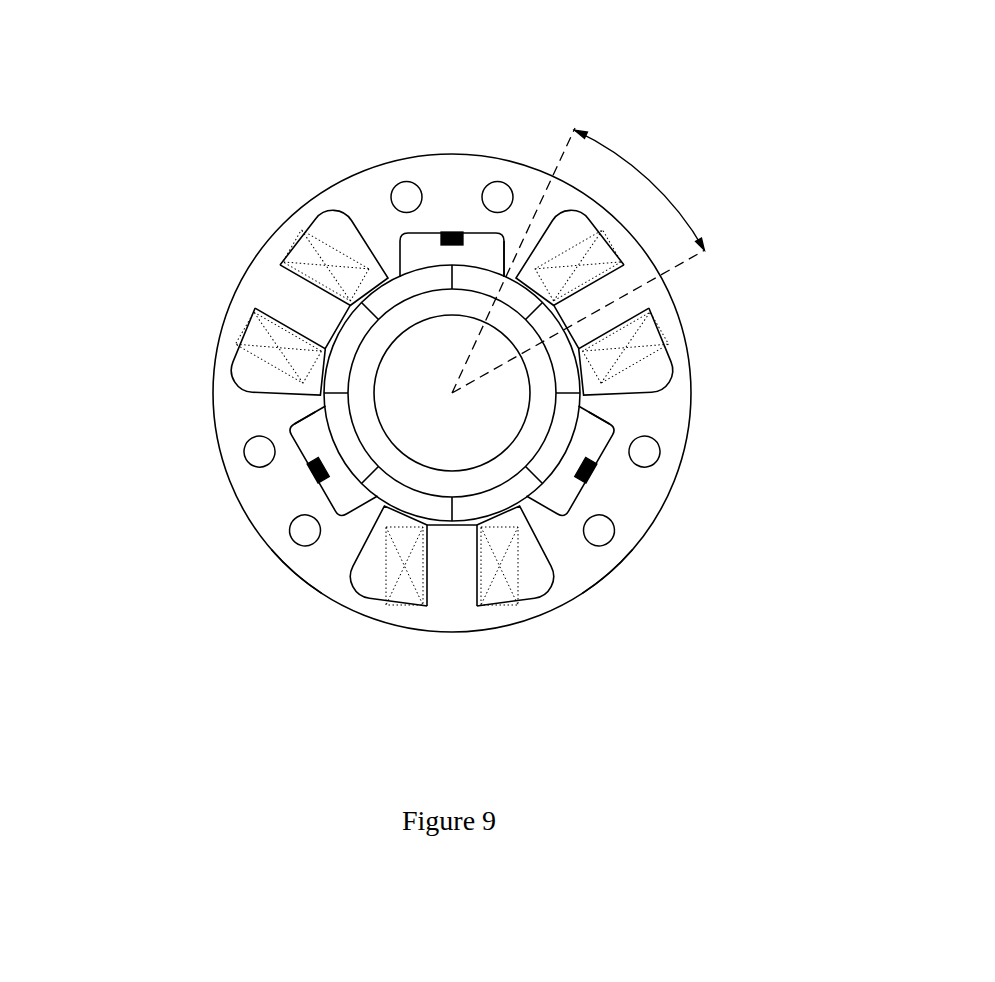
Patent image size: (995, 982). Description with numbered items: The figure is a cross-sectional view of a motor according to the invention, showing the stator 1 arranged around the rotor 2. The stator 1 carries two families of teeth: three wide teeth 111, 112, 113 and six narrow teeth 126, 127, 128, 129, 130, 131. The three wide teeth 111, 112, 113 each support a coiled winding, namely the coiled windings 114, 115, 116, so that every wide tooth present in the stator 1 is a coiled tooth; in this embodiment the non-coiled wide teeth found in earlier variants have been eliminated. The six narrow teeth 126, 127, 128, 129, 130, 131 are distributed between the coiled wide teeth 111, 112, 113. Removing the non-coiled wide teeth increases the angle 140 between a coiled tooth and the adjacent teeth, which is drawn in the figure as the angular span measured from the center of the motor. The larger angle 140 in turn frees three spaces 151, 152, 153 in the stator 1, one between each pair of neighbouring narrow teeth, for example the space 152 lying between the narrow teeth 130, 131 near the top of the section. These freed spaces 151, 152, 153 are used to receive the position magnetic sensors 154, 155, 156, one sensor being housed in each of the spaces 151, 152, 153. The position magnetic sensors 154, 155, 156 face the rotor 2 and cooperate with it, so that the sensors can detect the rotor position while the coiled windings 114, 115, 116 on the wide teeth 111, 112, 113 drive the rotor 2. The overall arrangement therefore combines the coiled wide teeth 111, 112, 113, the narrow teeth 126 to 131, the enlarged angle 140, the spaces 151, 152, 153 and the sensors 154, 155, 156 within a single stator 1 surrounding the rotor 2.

The stator 1 is at (445, 381).
The rotor 2 is at (533, 432).
The wide tooth 111 is at (585, 333).
The wide tooth 112 is at (451, 540).
The wide tooth 113 is at (328, 318).
The coiled winding 114 is at (640, 349).
The coiled winding 115 is at (402, 583).
The coiled winding 116 is at (318, 258).
The narrow tooth 126 is at (592, 408).
The narrow tooth 127 is at (604, 572).
The narrow tooth 128 is at (300, 572).
The narrow tooth 129 is at (318, 413).
The narrow tooth 130 is at (370, 178).
The narrow tooth 131 is at (513, 258).
The angle 140 is at (643, 168).
The space 151 is at (326, 500).
The space 152 is at (427, 255).
The space 153 is at (600, 443).
The position magnetic sensor 154 is at (318, 472).
The position magnetic sensor 155 is at (455, 233).
The position magnetic sensor 156 is at (597, 478).